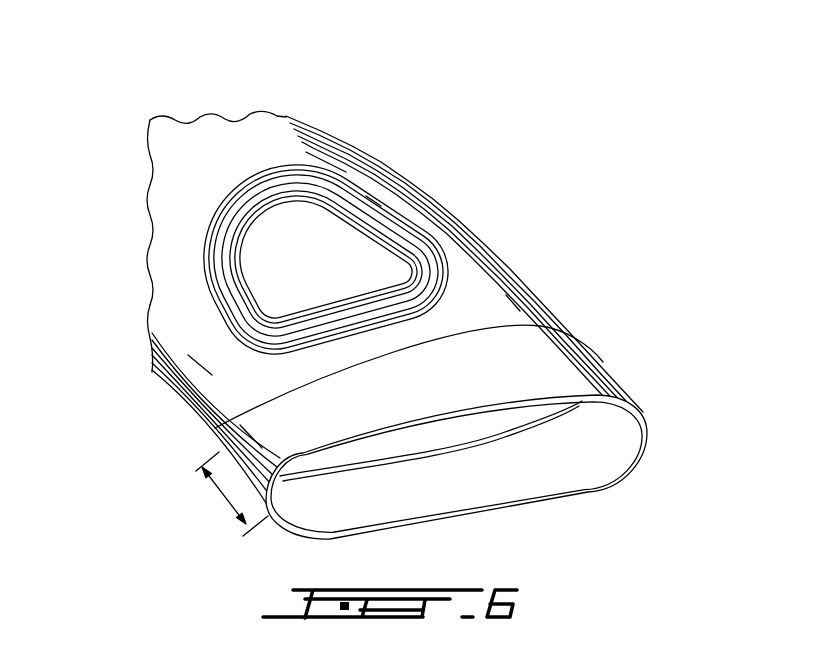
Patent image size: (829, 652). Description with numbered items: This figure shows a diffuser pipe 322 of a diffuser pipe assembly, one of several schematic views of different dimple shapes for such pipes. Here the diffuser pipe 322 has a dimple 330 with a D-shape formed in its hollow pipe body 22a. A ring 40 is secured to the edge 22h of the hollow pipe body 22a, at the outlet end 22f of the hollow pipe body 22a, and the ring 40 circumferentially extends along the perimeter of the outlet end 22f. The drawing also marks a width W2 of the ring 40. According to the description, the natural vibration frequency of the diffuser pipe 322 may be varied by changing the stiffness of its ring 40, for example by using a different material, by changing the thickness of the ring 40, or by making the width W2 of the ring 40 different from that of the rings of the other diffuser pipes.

The diffuser pipe 322 is at (449, 186).
The dimple 330 is at (347, 185).
The edge 22h is at (507, 330).
The outlet end 22f is at (507, 330).
The hollow pipe body 22a is at (177, 360).
The ring 40 is at (612, 372).
The width of the ring W2 is at (228, 500).